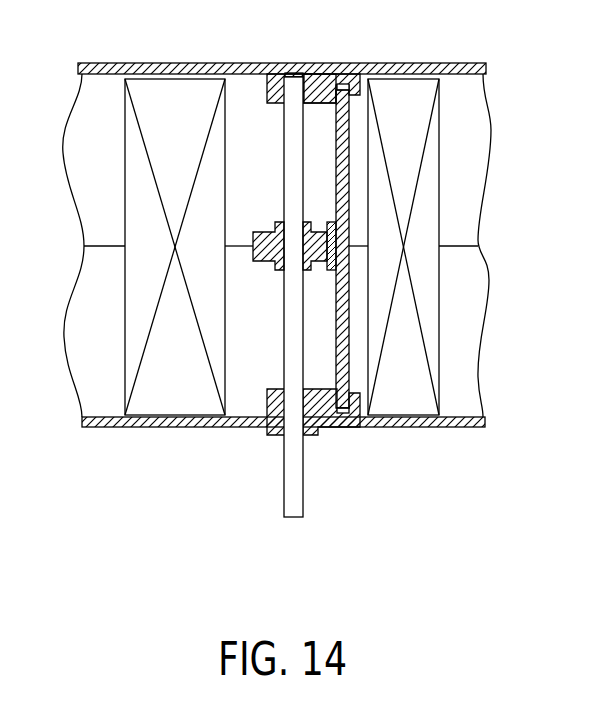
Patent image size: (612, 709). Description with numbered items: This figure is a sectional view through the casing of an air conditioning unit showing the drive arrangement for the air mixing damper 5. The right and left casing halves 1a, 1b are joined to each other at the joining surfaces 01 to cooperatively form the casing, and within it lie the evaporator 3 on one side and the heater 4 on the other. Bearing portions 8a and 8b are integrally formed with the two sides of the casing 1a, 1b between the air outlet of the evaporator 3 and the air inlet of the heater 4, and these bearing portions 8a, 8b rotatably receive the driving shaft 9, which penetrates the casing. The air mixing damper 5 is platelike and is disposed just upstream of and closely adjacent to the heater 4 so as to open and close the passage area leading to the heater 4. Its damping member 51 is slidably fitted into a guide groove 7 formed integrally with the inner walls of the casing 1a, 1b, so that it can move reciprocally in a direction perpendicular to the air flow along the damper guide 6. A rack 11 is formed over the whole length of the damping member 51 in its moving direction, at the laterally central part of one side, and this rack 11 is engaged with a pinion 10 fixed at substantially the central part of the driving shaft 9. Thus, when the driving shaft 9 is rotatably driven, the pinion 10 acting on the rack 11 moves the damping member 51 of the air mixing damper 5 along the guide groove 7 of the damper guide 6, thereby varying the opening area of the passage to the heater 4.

The joining surfaces 01 is at (460, 246).
The casing half 1a is at (112, 70).
The casing half 1b is at (96, 427).
The evaporator 3 is at (150, 402).
The heater 4 is at (400, 400).
The air mixing damper 5 is at (352, 348).
The damping member 51 is at (343, 88).
The damper guide 6 is at (318, 82).
The guide groove 7 is at (292, 74).
The bearing portion 8a is at (277, 74).
The bearing portion 8b is at (272, 437).
The driving shaft 9 is at (290, 508).
The pinion 10 is at (266, 258).
The rack 11 is at (331, 235).